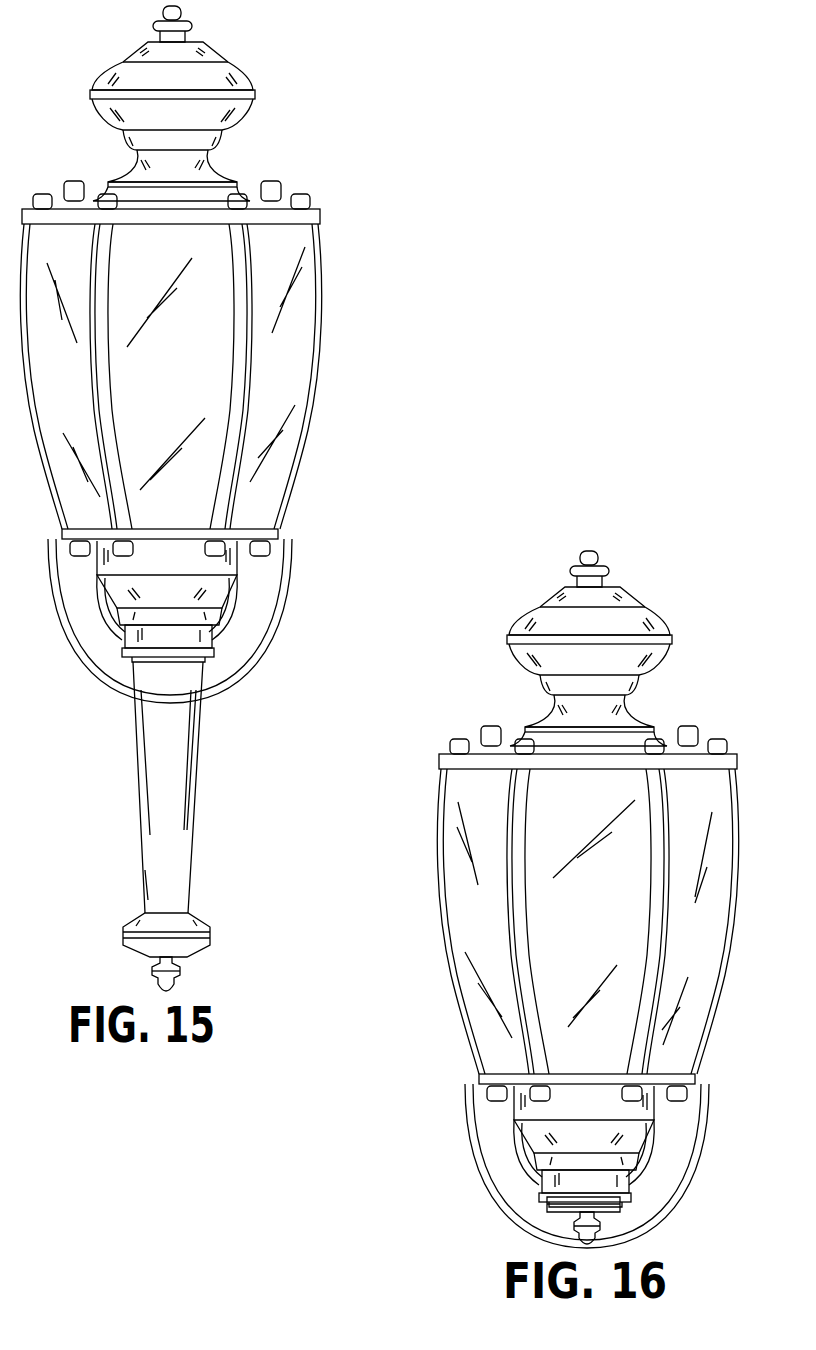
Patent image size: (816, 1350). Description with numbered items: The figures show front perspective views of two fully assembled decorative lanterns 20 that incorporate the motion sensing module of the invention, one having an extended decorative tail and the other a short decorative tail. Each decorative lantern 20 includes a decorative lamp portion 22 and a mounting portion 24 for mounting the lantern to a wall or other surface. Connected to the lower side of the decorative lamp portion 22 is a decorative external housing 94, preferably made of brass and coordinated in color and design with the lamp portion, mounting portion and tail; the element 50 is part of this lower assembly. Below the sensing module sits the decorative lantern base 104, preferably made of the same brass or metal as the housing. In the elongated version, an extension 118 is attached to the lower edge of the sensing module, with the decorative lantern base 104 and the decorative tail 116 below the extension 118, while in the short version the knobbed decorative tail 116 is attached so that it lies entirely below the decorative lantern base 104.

In FIG. 15, the decorative lantern 20 is at (331, 208).
In FIG. 16, the decorative lantern 20 is at (420, 790).
In FIG. 15, the decorative lamp portion 22 is at (305, 541).
In FIG. 16, the decorative lamp portion 22 is at (680, 547).
In FIG. 15, the mounting portion 24 is at (272, 588).
In FIG. 16, the mounting portion 24 is at (488, 1125).
In FIG. 15, the socket mounting flange 50 is at (122, 638).
In FIG. 16, the socket mounting flange 50 is at (612, 1180).
In FIG. 15, the decorative external housing 94 is at (132, 583).
In FIG. 16, the decorative external housing 94 is at (548, 1140).
In FIG. 15, the decorative lantern base 104 is at (200, 949).
In FIG. 16, the decorative lantern base 104 is at (545, 1202).
In FIG. 15, the decorative tail 116 is at (180, 973).
In FIG. 16, the decorative tail 116 is at (570, 1226).
In FIG. 15, the extension 118 is at (182, 772).